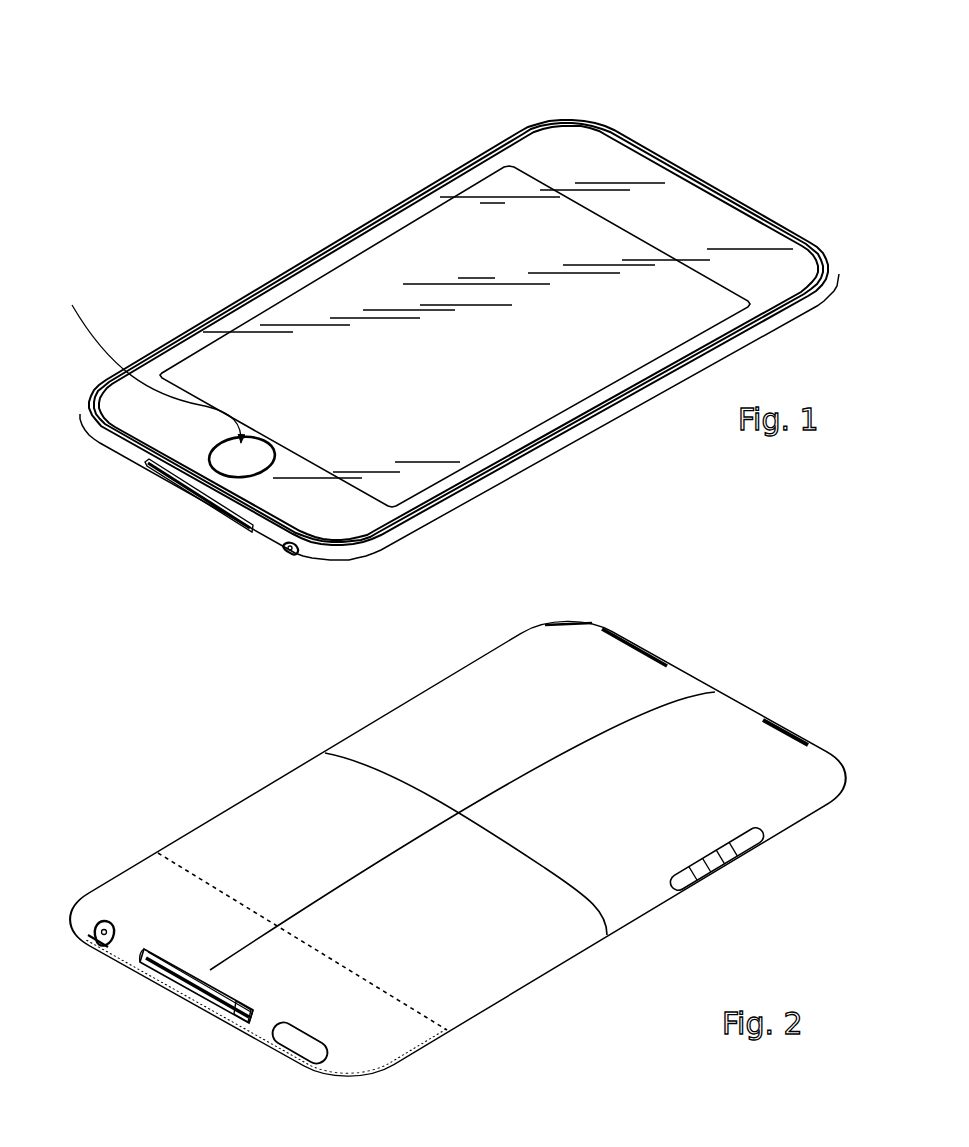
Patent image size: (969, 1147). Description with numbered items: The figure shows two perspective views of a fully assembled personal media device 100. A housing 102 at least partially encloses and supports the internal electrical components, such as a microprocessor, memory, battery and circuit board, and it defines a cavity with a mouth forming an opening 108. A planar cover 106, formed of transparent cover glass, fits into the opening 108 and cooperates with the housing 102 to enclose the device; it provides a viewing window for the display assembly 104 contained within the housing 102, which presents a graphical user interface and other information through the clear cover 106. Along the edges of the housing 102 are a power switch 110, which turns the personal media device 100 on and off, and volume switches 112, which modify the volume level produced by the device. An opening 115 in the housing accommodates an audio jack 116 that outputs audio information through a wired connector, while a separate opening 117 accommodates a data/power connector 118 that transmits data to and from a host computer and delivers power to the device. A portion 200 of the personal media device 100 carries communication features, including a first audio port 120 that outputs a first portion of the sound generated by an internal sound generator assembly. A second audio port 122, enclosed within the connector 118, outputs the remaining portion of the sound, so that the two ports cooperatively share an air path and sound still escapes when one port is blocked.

In FIG. 1, the personal media device 100 is at (180, 110).
In FIG. 1, the housing 102 is at (607, 422).
In FIG. 2, the housing 102 is at (480, 661).
In FIG. 1, the display assembly 104 is at (612, 219).
In FIG. 1, the cover 106 is at (365, 271).
In FIG. 1, the opening 108 is at (579, 147).
In FIG. 2, the power switch 110 is at (789, 735).
In FIG. 2, the volume switches 112 is at (749, 840).
In FIG. 2, the opening 115 is at (99, 922).
In FIG. 1, the audio jack 116 is at (281, 556).
In FIG. 2, the audio jack 116 is at (86, 951).
In FIG. 2, the opening 117 is at (187, 955).
In FIG. 1, the data/power connector 118 is at (181, 482).
In FIG. 2, the data/power connector 118 is at (153, 998).
In FIG. 2, the first audio port 120 is at (300, 1040).
In FIG. 2, the second audio port 122 is at (238, 1008).
In FIG. 2, the portion 200 is at (147, 877).